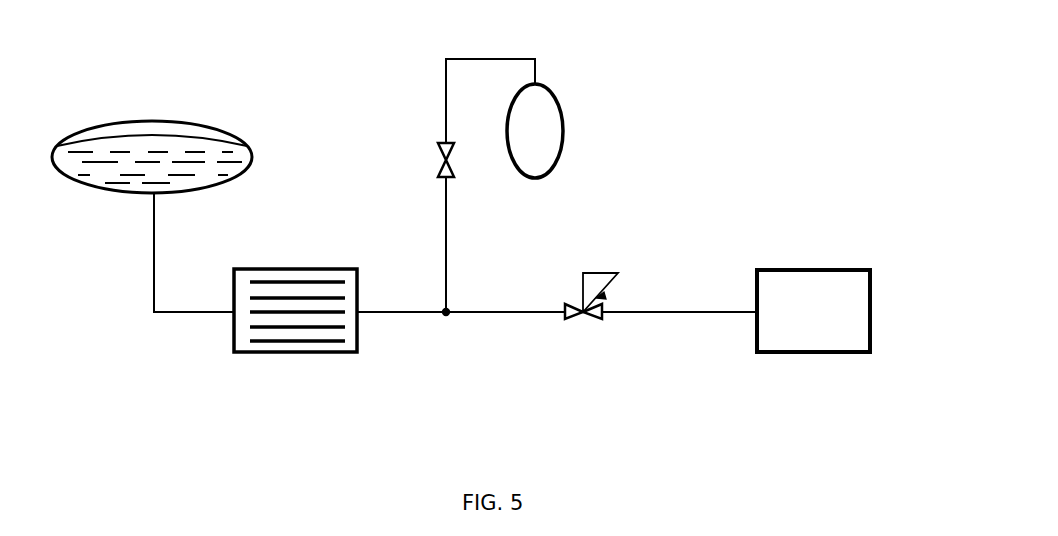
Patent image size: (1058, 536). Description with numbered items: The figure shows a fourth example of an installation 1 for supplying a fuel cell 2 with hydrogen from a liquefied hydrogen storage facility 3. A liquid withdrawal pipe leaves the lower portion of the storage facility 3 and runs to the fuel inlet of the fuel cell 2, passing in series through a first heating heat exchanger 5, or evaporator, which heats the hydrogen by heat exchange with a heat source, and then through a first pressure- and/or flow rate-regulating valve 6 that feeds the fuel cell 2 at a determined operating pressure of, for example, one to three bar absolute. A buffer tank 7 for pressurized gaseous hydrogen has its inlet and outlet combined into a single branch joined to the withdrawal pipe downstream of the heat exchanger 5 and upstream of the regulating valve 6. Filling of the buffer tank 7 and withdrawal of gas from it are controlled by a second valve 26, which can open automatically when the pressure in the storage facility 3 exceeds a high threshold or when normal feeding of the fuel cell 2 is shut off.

The installation 1 is at (745, 182).
The fuel cell 2 is at (848, 303).
The liquefied hydrogen storage facility 3 is at (115, 175).
The first heating heat exchanger 5 is at (318, 335).
The first pressure- and/or flow rate-regulating valve 6 is at (585, 325).
The buffer tank 7 is at (550, 137).
The second valve 26 is at (434, 152).